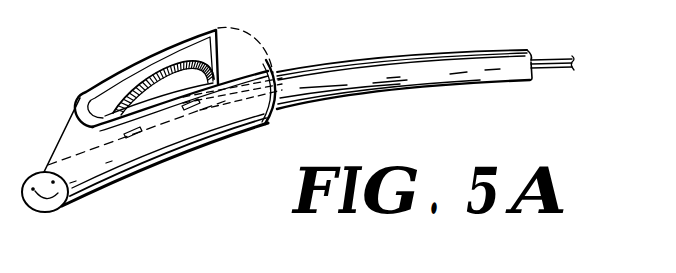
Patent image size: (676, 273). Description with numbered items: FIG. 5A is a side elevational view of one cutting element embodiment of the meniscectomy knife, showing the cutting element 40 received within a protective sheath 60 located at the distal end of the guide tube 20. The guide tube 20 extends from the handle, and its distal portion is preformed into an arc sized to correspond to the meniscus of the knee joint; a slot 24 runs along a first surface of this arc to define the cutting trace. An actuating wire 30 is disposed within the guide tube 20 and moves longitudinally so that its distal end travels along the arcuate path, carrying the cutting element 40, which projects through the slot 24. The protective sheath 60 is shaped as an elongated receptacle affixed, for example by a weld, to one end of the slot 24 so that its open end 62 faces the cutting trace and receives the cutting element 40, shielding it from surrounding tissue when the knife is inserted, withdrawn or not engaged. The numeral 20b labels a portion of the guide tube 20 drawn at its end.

The guide tube 20 is at (392, 83).
The proximal end of shaft 20b is at (33, 212).
The slot 24 is at (470, 55).
The actuating wire 30 is at (551, 68).
The cutting element 40 is at (160, 50).
The protective sheath 60 is at (58, 102).
The open end 62 is at (276, 41).